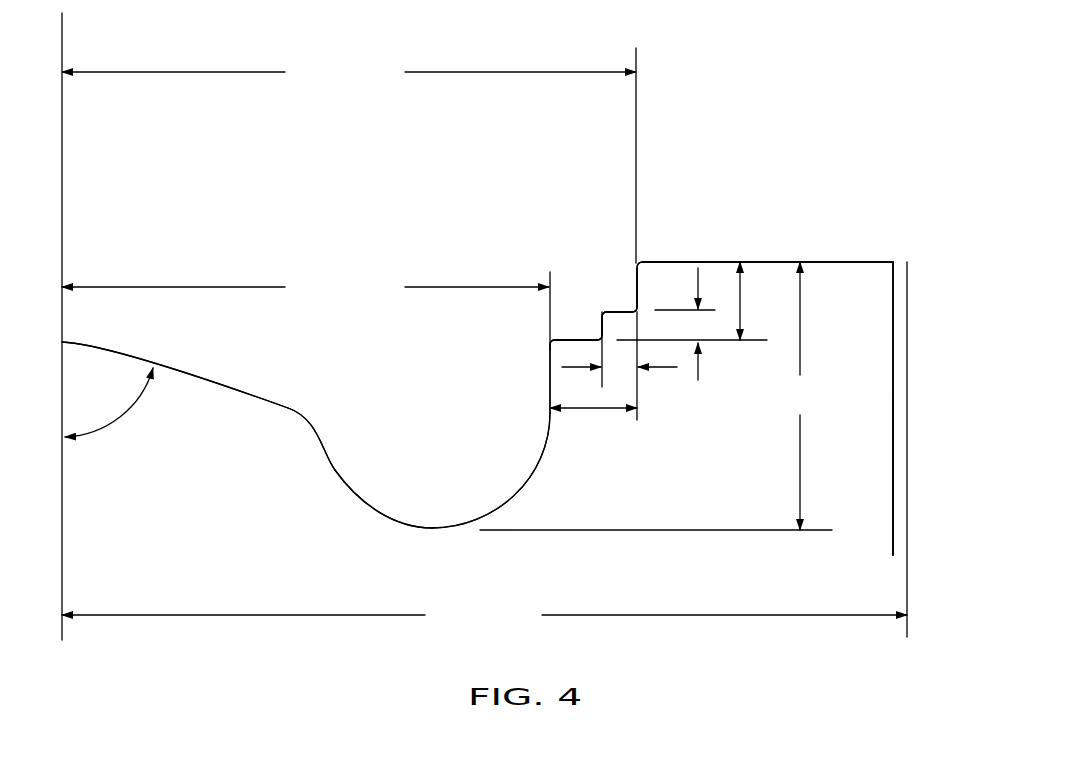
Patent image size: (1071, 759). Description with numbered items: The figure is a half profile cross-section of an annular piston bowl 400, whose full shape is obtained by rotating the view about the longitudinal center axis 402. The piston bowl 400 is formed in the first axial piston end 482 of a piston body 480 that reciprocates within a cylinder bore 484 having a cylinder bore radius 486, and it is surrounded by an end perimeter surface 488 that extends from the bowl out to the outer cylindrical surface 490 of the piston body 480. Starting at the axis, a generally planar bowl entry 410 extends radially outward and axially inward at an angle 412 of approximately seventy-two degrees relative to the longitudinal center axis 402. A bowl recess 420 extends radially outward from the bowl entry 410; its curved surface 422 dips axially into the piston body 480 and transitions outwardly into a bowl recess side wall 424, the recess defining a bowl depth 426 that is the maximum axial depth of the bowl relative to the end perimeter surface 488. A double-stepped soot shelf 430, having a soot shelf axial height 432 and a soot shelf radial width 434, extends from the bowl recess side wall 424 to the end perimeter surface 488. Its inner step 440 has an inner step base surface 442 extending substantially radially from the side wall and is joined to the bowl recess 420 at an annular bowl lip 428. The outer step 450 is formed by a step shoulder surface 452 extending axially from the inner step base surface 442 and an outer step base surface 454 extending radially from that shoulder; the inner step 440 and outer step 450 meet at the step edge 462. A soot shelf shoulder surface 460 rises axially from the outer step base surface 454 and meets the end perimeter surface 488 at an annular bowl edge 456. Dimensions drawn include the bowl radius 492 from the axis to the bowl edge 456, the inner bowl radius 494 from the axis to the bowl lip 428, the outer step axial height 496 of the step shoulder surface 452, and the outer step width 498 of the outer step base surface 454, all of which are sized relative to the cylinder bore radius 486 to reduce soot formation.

The piston bowl 400 is at (357, 353).
The longitudinal center axis 402 is at (62, 38).
The bowl entry 410 is at (177, 372).
The angle 412 is at (123, 418).
The bowl recess 420 is at (352, 483).
The curved surface 422 is at (502, 506).
The bowl recess side wall 424 is at (546, 392).
The bowl depth 426 is at (662, 396).
The annular bowl lip 428 is at (546, 336).
The soot shelf 430 is at (437, 150).
The soot shelf axial height 432 is at (743, 295).
The soot shelf radial width 434 is at (597, 412).
The inner step 440 is at (571, 338).
The inner step base surface 442 is at (565, 338).
The outer step 450 is at (598, 298).
The step shoulder surface 452 is at (578, 331).
The outer step base surface 454 is at (618, 307).
The annular bowl edge 456 is at (628, 255).
The soot shelf shoulder surface 460 is at (612, 290).
The step edge 462 is at (593, 296).
The piston body 480 is at (872, 280).
The first axial piston end 482 is at (837, 270).
The cylinder bore 484 is at (908, 448).
The cylinder bore radius 486 is at (484, 615).
The end perimeter surface 488 is at (685, 262).
The outer cylindrical surface 490 is at (895, 392).
The bowl radius 492 is at (349, 155).
The inner bowl radius 494 is at (306, 308).
The outer step axial height 496 is at (705, 280).
The outer step width 498 is at (670, 370).